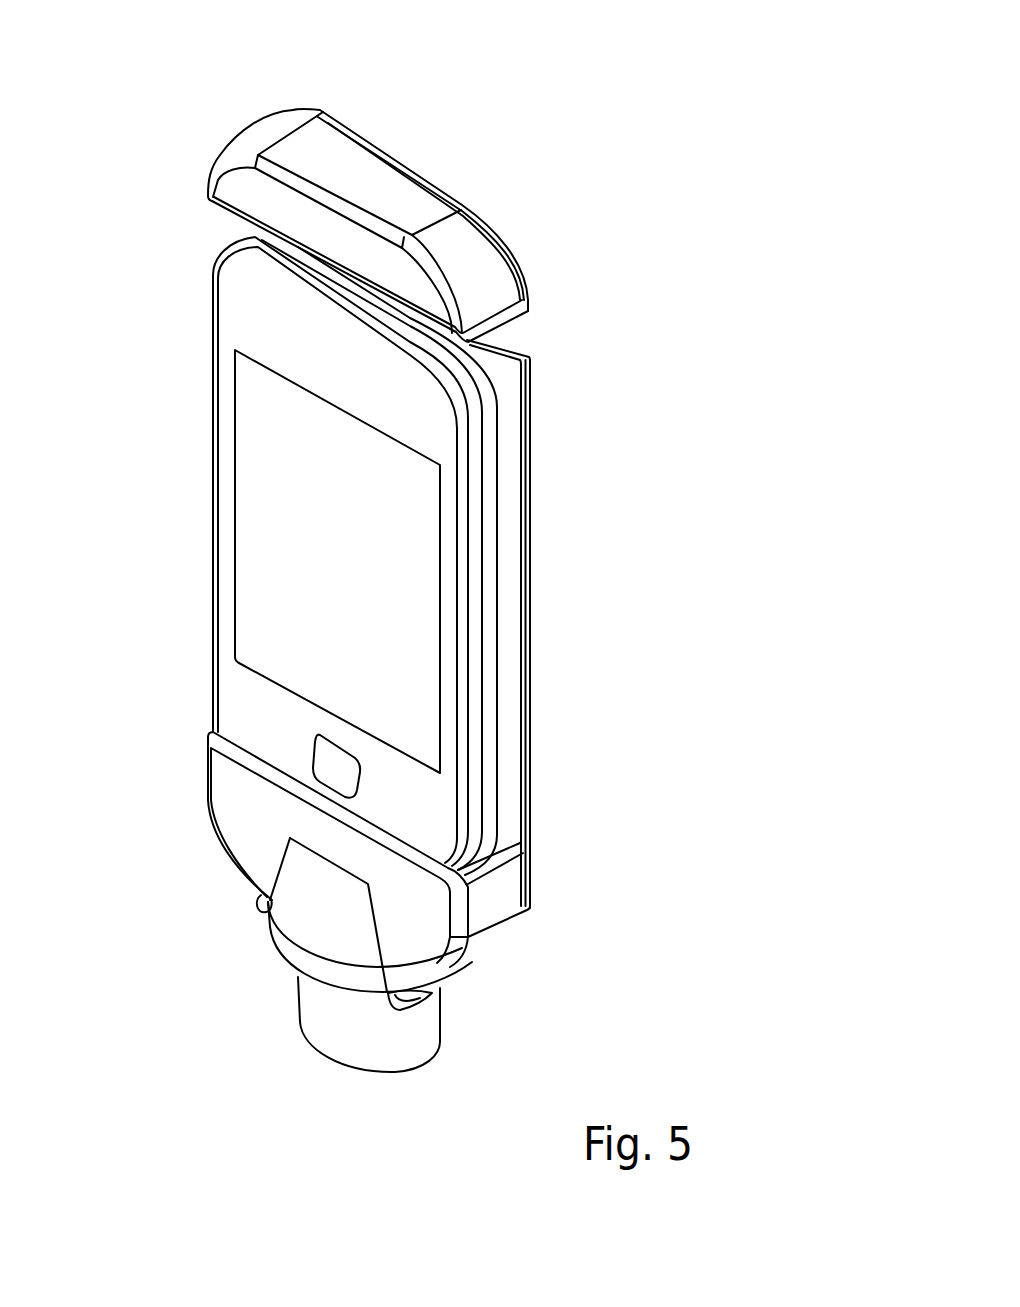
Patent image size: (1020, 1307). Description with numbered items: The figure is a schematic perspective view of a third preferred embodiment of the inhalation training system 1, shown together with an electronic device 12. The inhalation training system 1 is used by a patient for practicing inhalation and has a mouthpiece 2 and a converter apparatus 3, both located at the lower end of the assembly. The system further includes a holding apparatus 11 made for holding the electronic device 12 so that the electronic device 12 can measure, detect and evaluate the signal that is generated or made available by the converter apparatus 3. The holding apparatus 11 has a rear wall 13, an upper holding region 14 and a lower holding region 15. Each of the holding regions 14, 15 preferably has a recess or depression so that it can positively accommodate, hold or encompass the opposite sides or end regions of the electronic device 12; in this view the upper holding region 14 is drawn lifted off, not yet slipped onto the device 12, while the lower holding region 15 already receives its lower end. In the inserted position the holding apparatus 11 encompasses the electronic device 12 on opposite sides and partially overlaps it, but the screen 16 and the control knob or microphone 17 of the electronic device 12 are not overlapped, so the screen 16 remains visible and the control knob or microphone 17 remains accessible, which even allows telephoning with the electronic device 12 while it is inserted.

The inhalation training system 1 is at (551, 148).
The mouthpiece 2 is at (422, 1042).
The converter apparatus 3 is at (240, 831).
The holding apparatus 11 is at (550, 499).
The electronic device 12 is at (209, 600).
The rear wall 13 is at (531, 653).
The upper holding region 14 is at (495, 257).
The lower holding region 15 is at (483, 862).
The screen 16 is at (262, 472).
The control knob or microphone 17 is at (333, 760).